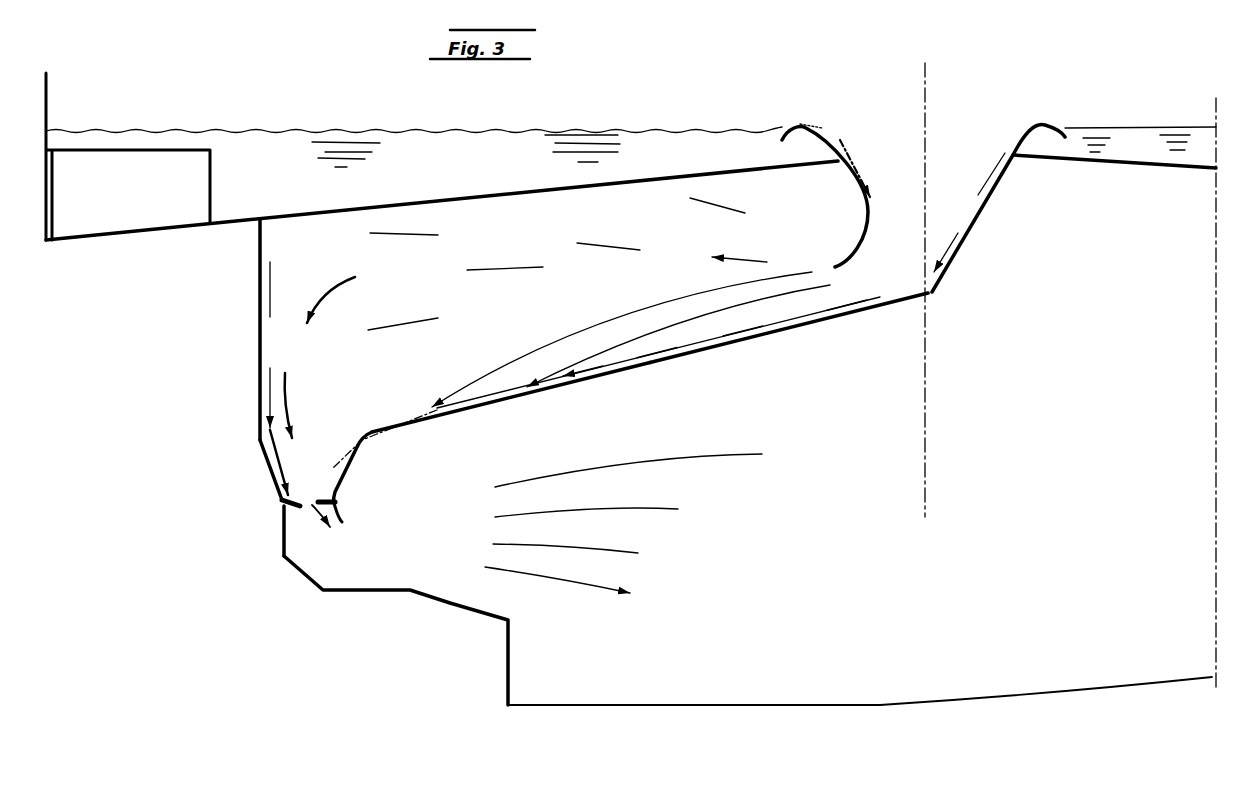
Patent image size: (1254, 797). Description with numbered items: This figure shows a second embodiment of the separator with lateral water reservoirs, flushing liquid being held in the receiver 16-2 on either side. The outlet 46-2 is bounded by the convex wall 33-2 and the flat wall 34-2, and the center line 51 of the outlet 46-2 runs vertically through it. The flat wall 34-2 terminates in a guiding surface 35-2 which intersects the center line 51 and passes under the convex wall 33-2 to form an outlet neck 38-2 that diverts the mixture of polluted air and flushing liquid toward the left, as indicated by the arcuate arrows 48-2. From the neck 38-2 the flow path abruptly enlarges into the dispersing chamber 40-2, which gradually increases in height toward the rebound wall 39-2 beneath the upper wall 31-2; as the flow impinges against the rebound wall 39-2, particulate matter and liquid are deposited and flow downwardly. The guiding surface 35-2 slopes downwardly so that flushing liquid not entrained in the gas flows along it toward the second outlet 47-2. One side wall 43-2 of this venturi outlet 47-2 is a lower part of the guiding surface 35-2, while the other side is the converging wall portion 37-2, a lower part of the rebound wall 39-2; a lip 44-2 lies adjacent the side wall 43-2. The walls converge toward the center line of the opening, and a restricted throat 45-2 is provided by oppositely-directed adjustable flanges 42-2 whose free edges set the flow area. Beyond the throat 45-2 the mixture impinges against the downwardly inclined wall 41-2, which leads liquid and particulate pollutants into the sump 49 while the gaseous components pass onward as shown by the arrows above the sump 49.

The flushing liquid receiver 16-2 is at (263, 143).
The inclined top wall 31-2 is at (470, 199).
The convex wall 33-2 is at (863, 234).
The flat wall 34-2 is at (970, 230).
The guiding surface 35-2 is at (803, 318).
The converging wall portion 37-2 is at (268, 467).
The outlet neck 38-2 is at (850, 282).
The rebound wall 39-2 is at (256, 352).
The dispersing chamber 40-2 is at (525, 314).
The downwardly inclined wall 41-2 is at (312, 582).
The adjustable flanges 42-2 is at (285, 518).
The side wall 43-2 is at (347, 465).
The lip 44-2 is at (334, 508).
The restricted throat 45-2 is at (307, 512).
The outlet 46-2 is at (953, 158).
The second outlet 47-2 is at (310, 478).
The arcuate arrows 48-2 is at (660, 347).
The sump 49 is at (916, 649).
The center line 51 is at (925, 450).